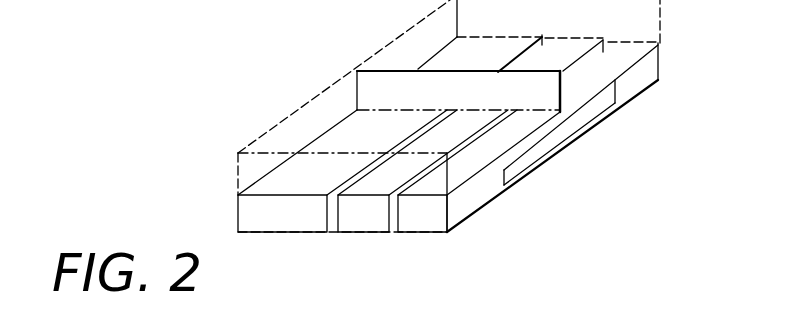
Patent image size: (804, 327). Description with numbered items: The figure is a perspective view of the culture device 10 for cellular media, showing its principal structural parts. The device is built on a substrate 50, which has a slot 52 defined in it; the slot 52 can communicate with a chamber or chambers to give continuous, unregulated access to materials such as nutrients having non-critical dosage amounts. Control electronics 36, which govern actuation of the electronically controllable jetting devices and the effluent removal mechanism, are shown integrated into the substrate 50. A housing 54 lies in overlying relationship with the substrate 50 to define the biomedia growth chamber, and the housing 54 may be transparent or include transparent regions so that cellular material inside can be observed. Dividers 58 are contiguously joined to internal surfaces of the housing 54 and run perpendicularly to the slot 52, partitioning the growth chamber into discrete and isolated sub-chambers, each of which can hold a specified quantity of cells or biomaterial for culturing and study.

The culture device 10 is at (246, 99).
The control electronics 36 is at (522, 166).
The substrate 50 is at (230, 207).
The slot 52 is at (331, 203).
The housing 54 is at (423, 13).
The dividers 58 is at (562, 92).